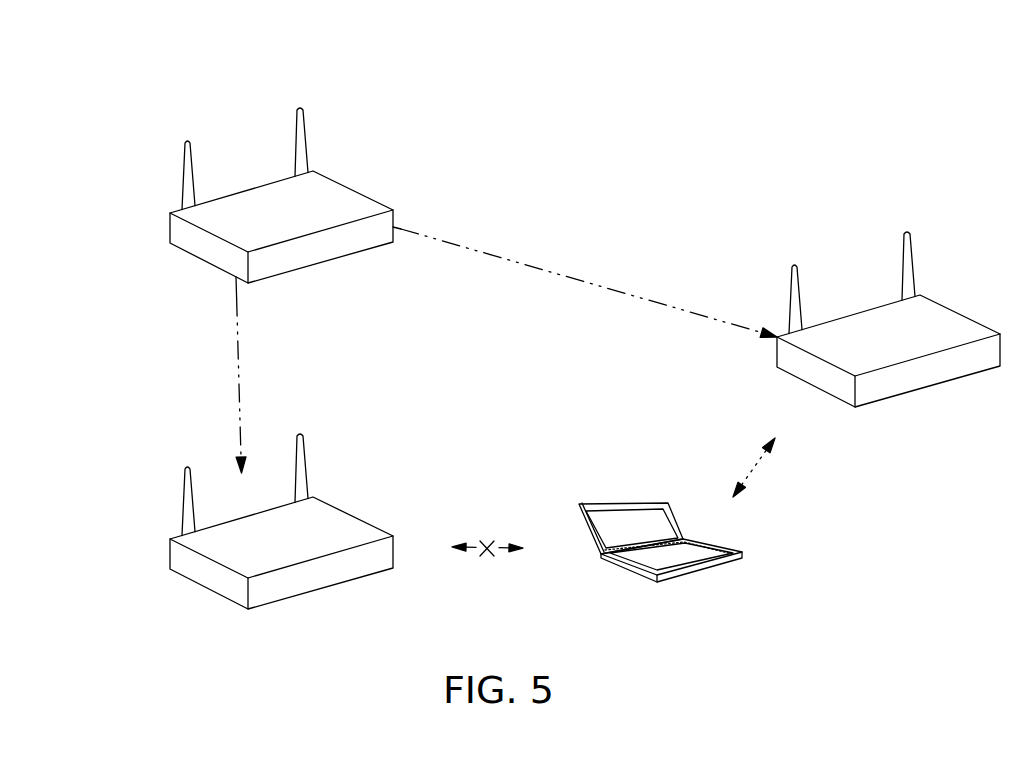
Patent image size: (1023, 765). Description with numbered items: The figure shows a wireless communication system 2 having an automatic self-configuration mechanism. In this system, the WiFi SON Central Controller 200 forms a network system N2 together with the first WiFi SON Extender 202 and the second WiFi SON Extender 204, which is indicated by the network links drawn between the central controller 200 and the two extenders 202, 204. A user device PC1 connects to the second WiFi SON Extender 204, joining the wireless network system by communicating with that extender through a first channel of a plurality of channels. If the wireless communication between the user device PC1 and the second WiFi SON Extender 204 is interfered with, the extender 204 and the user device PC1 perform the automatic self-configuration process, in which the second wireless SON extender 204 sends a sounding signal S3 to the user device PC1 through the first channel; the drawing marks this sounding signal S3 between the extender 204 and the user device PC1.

The wireless communication system 2 is at (142, 68).
The WiFi SON Central Controller 200 is at (170, 225).
The first WiFi SON Extender 202 is at (810, 385).
The second WiFi SON Extender 204 is at (170, 552).
The network system N2 is at (478, 346).
The sounding signal S3 is at (487, 531).
The user device PC1 is at (700, 570).